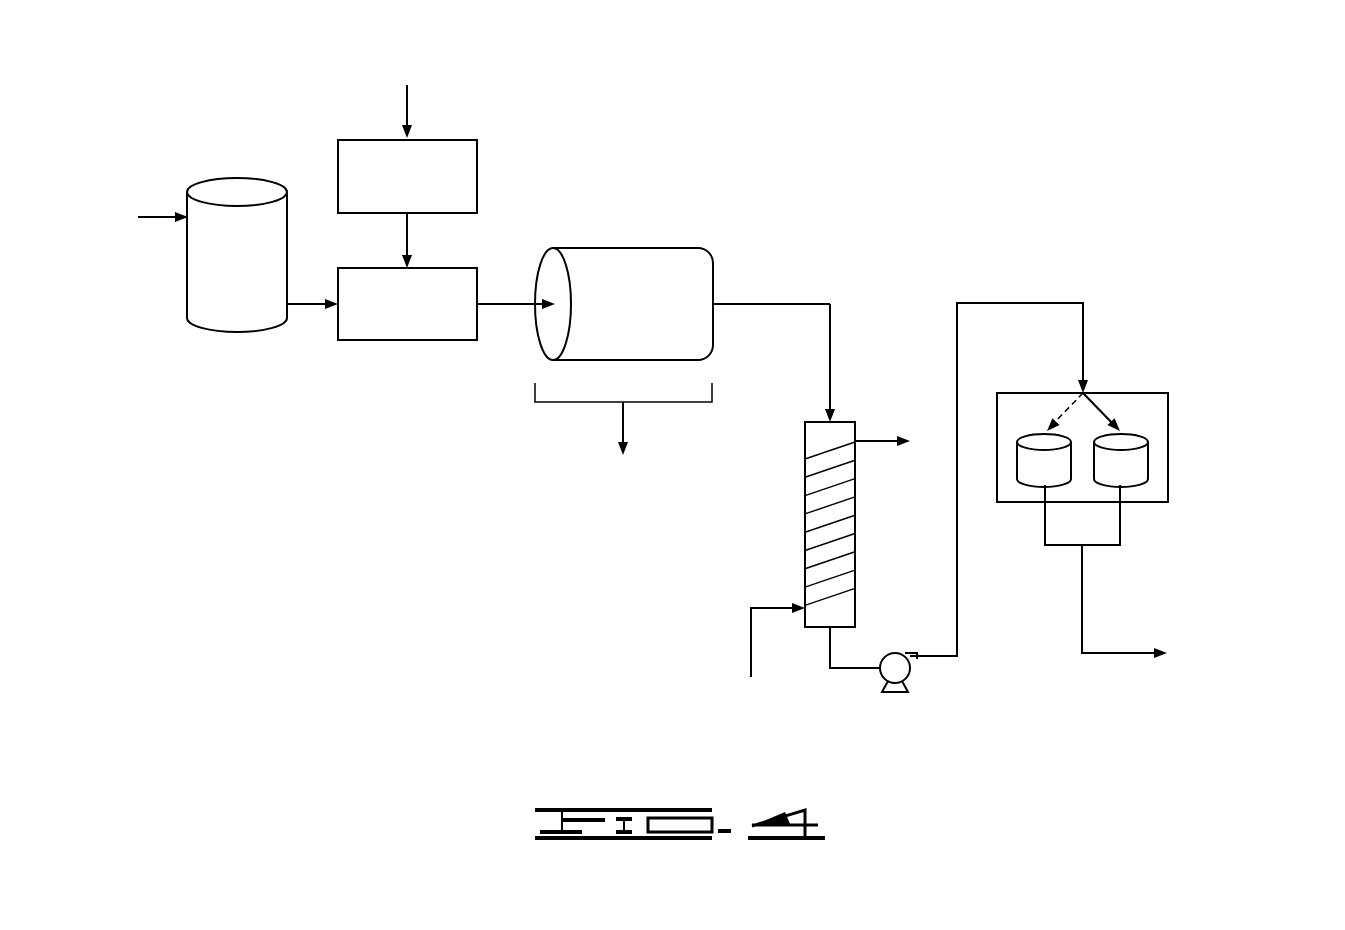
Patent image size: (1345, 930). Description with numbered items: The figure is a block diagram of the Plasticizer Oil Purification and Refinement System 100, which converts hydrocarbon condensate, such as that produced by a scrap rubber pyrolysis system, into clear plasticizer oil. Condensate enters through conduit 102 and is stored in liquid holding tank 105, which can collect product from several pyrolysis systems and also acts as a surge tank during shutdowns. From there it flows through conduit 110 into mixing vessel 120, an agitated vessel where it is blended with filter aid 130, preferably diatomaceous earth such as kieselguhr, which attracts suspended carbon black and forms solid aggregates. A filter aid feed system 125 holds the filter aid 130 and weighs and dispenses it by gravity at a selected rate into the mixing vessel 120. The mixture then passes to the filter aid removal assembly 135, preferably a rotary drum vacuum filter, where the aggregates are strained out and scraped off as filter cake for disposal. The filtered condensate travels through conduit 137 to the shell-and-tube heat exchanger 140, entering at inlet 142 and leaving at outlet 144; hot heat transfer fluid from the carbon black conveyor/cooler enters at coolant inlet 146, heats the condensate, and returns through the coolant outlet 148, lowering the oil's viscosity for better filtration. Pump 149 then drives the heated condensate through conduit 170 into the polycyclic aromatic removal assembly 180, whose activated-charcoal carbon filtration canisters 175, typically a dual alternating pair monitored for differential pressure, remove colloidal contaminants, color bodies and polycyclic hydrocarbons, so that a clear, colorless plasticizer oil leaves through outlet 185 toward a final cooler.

The oil processing system 100 is at (834, 172).
The conduit 102 is at (170, 220).
The liquid holding tank 105 is at (232, 185).
The conduit 110 is at (310, 306).
The mixing vessel 120 is at (412, 341).
The filter aid feed system 125 is at (478, 158).
The filter aid 130 is at (378, 43).
The filter aid removal assembly 135 is at (613, 247).
The conduit 137 is at (795, 303).
The heat exchanger 140 is at (786, 473).
The inlet 142 is at (829, 400).
The outlet 144 is at (829, 648).
The coolant inlet 146 is at (780, 607).
The coolant outlet 148 is at (880, 445).
The pump 149 is at (912, 675).
The conduit 170 is at (1041, 303).
The carbon filtration canisters 175 is at (1030, 487).
The polycyclic aromatic removal assembly 180 is at (1168, 418).
The outlet 185 is at (1081, 617).